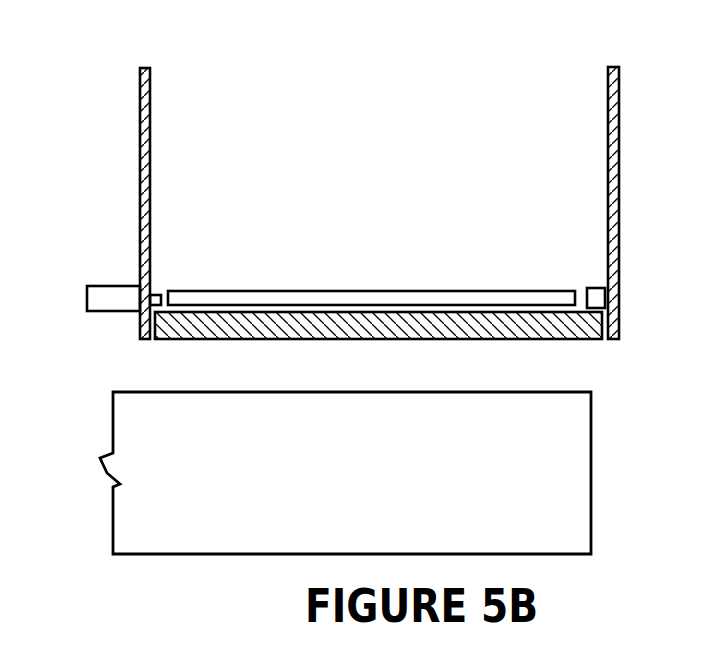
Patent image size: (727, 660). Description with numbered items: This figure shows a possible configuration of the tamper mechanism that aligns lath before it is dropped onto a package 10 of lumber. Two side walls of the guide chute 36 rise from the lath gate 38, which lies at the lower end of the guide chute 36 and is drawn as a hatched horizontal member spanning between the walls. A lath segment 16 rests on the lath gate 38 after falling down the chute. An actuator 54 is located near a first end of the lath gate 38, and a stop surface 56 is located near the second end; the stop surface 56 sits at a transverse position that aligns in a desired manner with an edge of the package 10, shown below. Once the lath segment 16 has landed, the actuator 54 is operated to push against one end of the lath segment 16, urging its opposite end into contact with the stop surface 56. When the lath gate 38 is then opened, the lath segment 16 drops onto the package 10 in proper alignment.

The guide chute 36 is at (206, 66).
The lath gate 38 is at (378, 340).
The lath segment 16 is at (372, 290).
The actuator 54 is at (116, 285).
The stop surface 56 is at (601, 287).
The package 10 is at (128, 391).